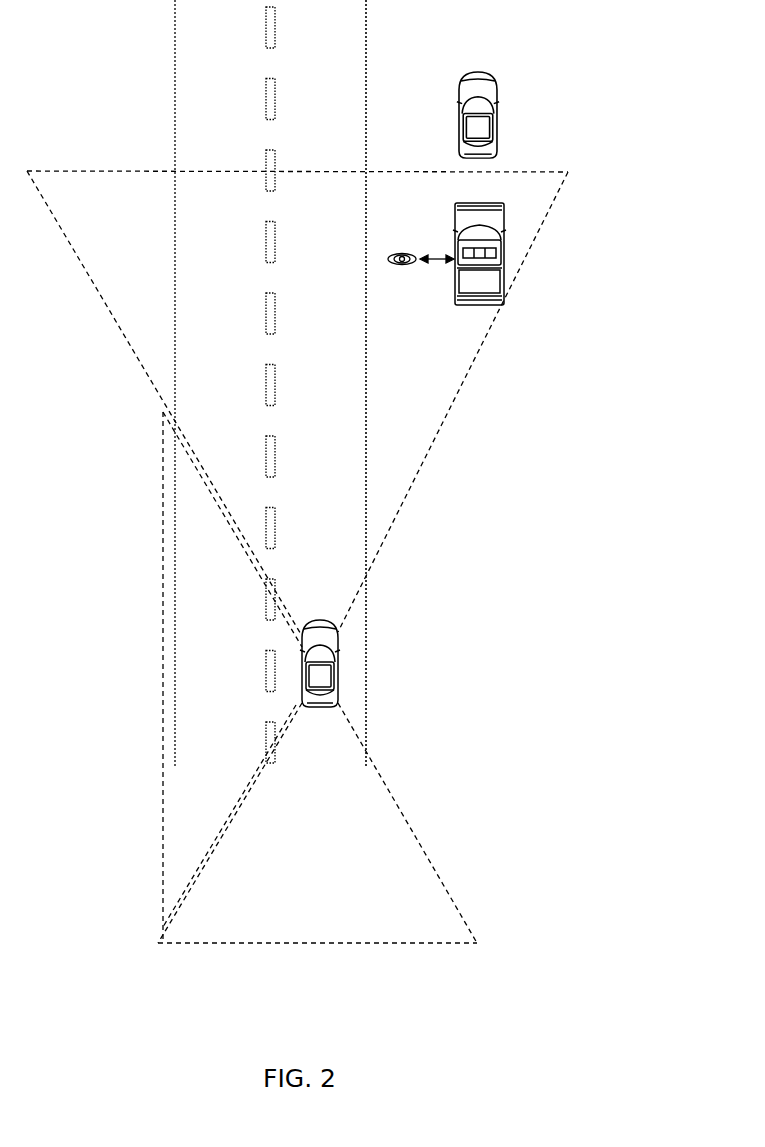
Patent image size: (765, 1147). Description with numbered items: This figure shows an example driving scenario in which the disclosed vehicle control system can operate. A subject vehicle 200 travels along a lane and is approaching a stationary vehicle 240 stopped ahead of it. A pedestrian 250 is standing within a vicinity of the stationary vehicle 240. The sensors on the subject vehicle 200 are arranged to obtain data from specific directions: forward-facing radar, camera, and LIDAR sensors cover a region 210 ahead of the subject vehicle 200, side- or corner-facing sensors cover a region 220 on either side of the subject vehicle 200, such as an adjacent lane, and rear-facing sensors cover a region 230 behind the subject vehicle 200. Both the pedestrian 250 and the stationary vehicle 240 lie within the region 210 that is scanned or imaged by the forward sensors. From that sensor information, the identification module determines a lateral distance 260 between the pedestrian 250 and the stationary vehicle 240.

The subject vehicle 200 is at (340, 680).
The region ahead of the subject vehicle 210 is at (383, 527).
The region on either side of the subject vehicle 220 is at (187, 571).
The region behind the subject vehicle 230 is at (402, 842).
The stationary vehicle 240 is at (504, 278).
The pedestrian 250 is at (386, 260).
The lateral distance 260 is at (436, 267).